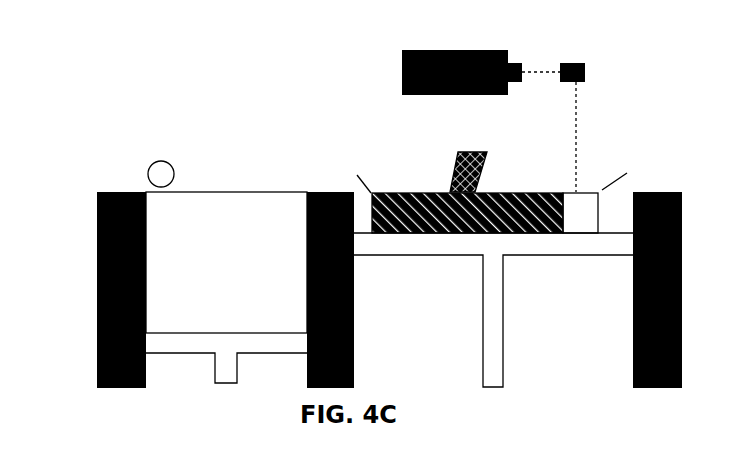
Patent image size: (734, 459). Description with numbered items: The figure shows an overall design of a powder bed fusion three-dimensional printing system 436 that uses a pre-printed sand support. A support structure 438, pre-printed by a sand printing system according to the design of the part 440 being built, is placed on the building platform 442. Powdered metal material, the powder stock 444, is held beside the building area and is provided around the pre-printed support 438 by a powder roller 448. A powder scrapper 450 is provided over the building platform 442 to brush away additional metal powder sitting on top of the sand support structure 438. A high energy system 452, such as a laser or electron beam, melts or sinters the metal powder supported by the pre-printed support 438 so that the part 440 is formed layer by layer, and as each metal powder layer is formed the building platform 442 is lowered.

The 3DP system 436 is at (322, 82).
The pre-printed support structure 438 is at (424, 192).
The part 440 is at (594, 192).
The building platform 442 is at (496, 248).
The powder stock 444 is at (278, 205).
The powder roller 448 is at (163, 178).
The powder scrapper 450 is at (480, 178).
The high energy system 452 is at (510, 56).